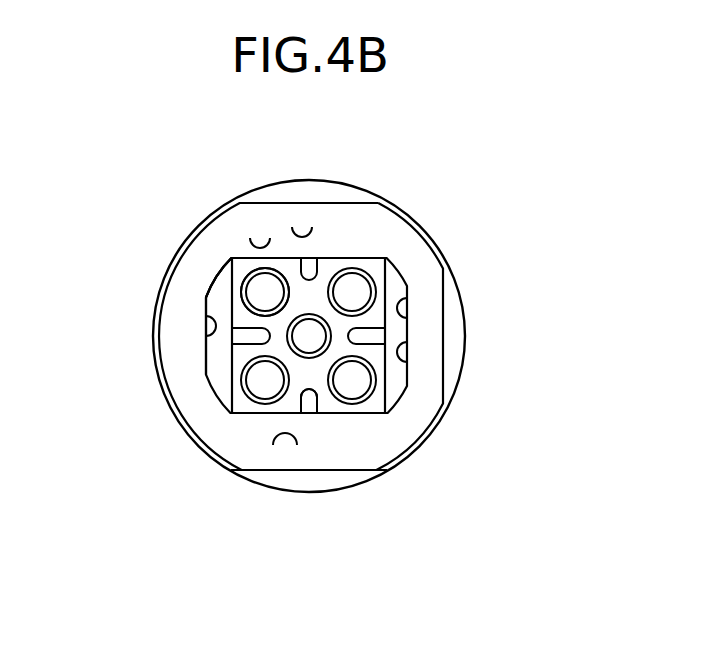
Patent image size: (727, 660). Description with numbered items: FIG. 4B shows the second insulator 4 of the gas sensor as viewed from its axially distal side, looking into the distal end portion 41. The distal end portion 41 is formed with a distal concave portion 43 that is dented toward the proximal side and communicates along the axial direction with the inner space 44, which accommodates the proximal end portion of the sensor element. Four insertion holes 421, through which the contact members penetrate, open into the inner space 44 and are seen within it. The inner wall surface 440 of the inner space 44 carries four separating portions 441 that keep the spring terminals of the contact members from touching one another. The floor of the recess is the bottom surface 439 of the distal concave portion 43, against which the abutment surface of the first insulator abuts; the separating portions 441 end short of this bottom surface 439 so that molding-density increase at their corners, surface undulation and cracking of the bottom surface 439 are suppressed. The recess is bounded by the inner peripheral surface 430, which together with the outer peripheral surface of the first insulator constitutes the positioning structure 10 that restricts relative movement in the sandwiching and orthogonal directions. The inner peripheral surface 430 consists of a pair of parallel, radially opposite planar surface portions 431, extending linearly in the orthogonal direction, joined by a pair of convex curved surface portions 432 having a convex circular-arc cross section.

The second insulator 4 is at (467, 454).
The positioning structure 10 is at (252, 257).
The distal end portion 41 is at (428, 370).
The distal concave portion 43 is at (406, 295).
The inner space 44 is at (307, 297).
The insertion holes 421 is at (232, 262).
The inner peripheral surface 430 is at (252, 257).
The planar surface portions 431 is at (208, 318).
The convex curved surface portions 432 is at (293, 236).
The bottom surface 439 is at (215, 357).
The inner wall surface 440 is at (353, 383).
The separating portions 441 is at (263, 290).